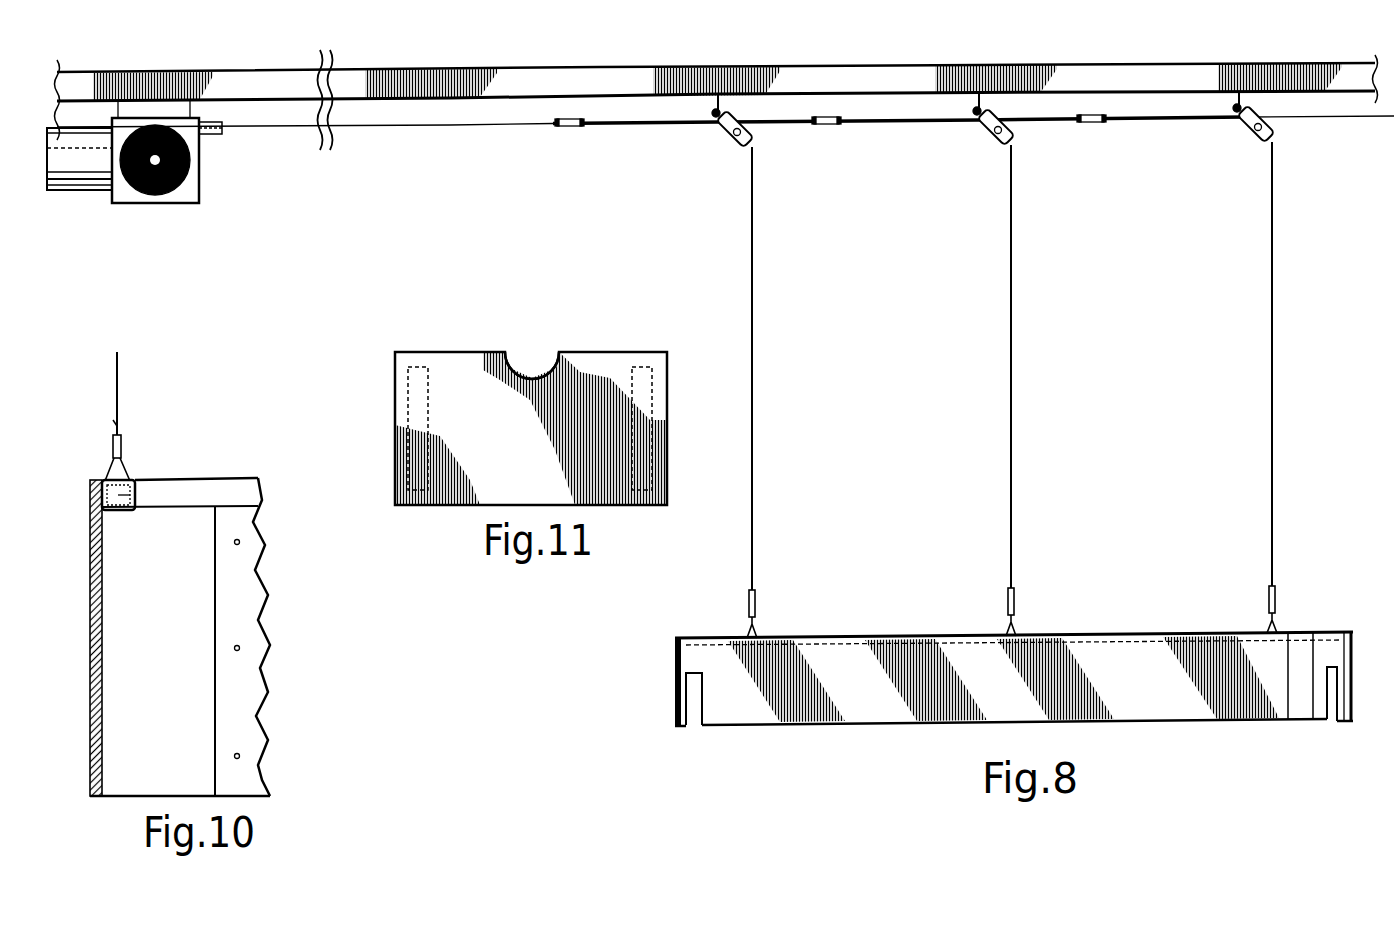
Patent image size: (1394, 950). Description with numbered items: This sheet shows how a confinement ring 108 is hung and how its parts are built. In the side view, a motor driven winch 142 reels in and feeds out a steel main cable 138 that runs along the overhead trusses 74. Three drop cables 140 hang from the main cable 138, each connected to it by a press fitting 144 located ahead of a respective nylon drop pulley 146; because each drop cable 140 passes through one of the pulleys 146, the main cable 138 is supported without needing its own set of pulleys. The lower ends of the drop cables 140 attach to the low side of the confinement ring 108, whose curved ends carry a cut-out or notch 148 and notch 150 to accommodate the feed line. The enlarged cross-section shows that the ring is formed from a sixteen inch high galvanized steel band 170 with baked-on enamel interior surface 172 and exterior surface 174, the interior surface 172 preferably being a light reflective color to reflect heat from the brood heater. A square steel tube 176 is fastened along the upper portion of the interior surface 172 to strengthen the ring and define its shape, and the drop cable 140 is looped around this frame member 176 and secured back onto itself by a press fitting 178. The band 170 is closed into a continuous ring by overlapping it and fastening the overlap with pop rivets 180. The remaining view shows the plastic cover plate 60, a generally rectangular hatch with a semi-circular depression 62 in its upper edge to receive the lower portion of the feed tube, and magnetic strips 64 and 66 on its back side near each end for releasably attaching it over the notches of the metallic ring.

In FIG. 11, the cover plate 60 is at (600, 352).
In FIG. 11, the semi-circular depression 62 is at (512, 364).
In FIG. 11, the magnetic strip 64 is at (417, 407).
In FIG. 11, the magnetic strip 66 is at (648, 390).
In FIG. 8, the truss 74 is at (716, 100).
In FIG. 8, the confinement ring 108 is at (1160, 633).
In FIG. 10, the confinement ring 108 is at (90, 588).
In FIG. 8, the main cable 138 is at (441, 126).
In FIG. 8, the drop cable 140 is at (753, 432).
In FIG. 10, the drop cable 140 is at (117, 389).
In FIG. 8, the winch 142 is at (200, 182).
In FIG. 8, the press fitting 144 is at (565, 128).
In FIG. 8, the drop pulley 146 is at (728, 136).
In FIG. 8, the notch 148 is at (692, 710).
In FIG. 8, the notch 150 is at (1331, 712).
In FIG. 10, the steel band 170 is at (90, 693).
In FIG. 10, the interior surface 172 is at (104, 719).
In FIG. 10, the exterior surface 174 is at (90, 738).
In FIG. 10, the square steel tube 176 is at (135, 494).
In FIG. 10, the press fitting 178 is at (112, 447).
In FIG. 10, the pop rivets 180 is at (240, 542).